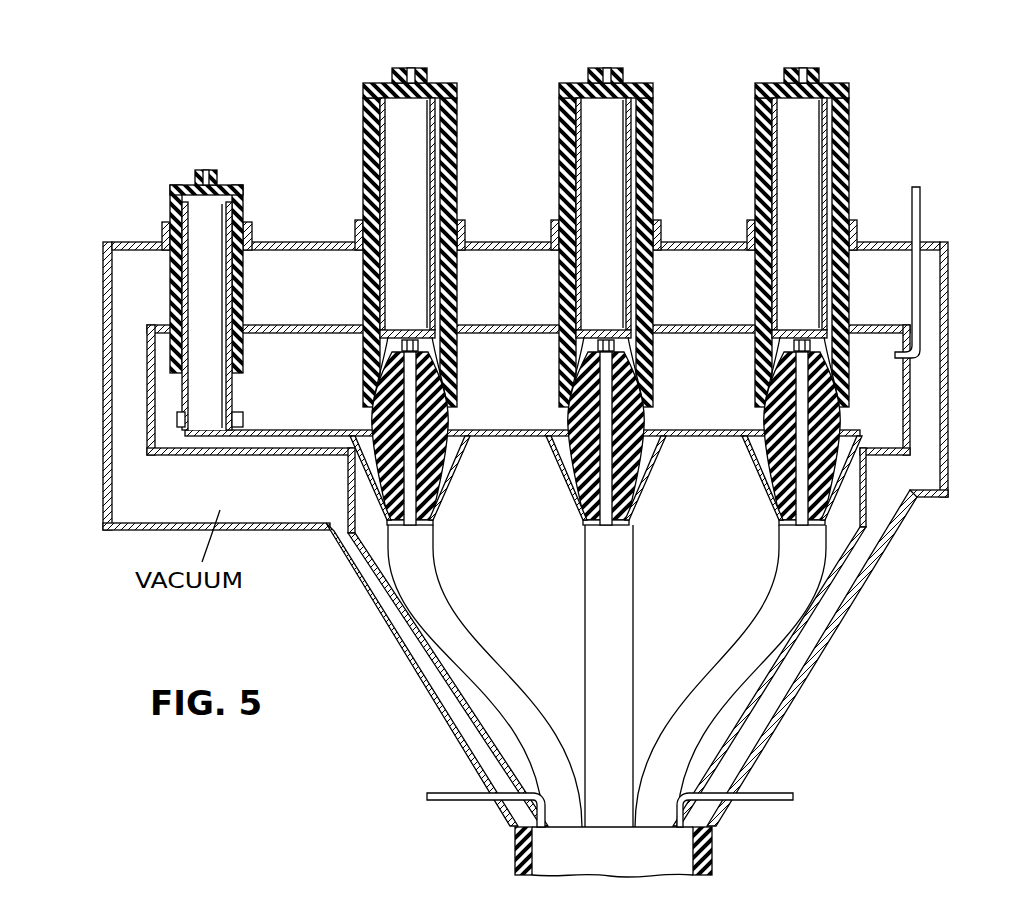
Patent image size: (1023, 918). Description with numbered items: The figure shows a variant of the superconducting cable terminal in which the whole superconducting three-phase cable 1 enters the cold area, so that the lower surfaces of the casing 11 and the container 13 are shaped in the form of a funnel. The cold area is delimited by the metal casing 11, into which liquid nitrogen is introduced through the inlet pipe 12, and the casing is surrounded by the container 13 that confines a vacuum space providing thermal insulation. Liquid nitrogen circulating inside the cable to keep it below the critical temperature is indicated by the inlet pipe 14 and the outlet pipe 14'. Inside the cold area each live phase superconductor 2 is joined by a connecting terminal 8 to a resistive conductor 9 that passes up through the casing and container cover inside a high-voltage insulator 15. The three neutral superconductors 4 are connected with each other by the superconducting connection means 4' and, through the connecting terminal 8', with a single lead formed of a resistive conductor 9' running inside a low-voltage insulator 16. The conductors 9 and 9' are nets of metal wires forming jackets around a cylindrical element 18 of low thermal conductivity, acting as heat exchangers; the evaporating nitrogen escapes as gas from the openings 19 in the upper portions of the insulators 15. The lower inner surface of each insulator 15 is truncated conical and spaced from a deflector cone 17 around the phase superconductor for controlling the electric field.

The superconducting three-phase cable 1 is at (687, 850).
The phase superconductor 2 is at (408, 377).
The neutral superconductor 4 is at (606, 478).
The superconducting connection means 4' is at (522, 461).
The connecting terminal 8 is at (643, 322).
The connecting terminal 8' is at (230, 409).
The resistive conductor 9 is at (603, 218).
The resistive conductor 9' is at (232, 316).
The casing 11 is at (908, 400).
The inlet pipe 12 is at (917, 208).
The container 13 is at (108, 343).
The inlet pipe 14 is at (735, 819).
The outlet pipe 14' is at (486, 819).
The high-voltage insulator 15 is at (457, 135).
The low-voltage insulator 16 is at (243, 193).
The deflector cone 17 is at (430, 422).
The cylindrical element 18 is at (393, 282).
The openings 19 is at (453, 105).